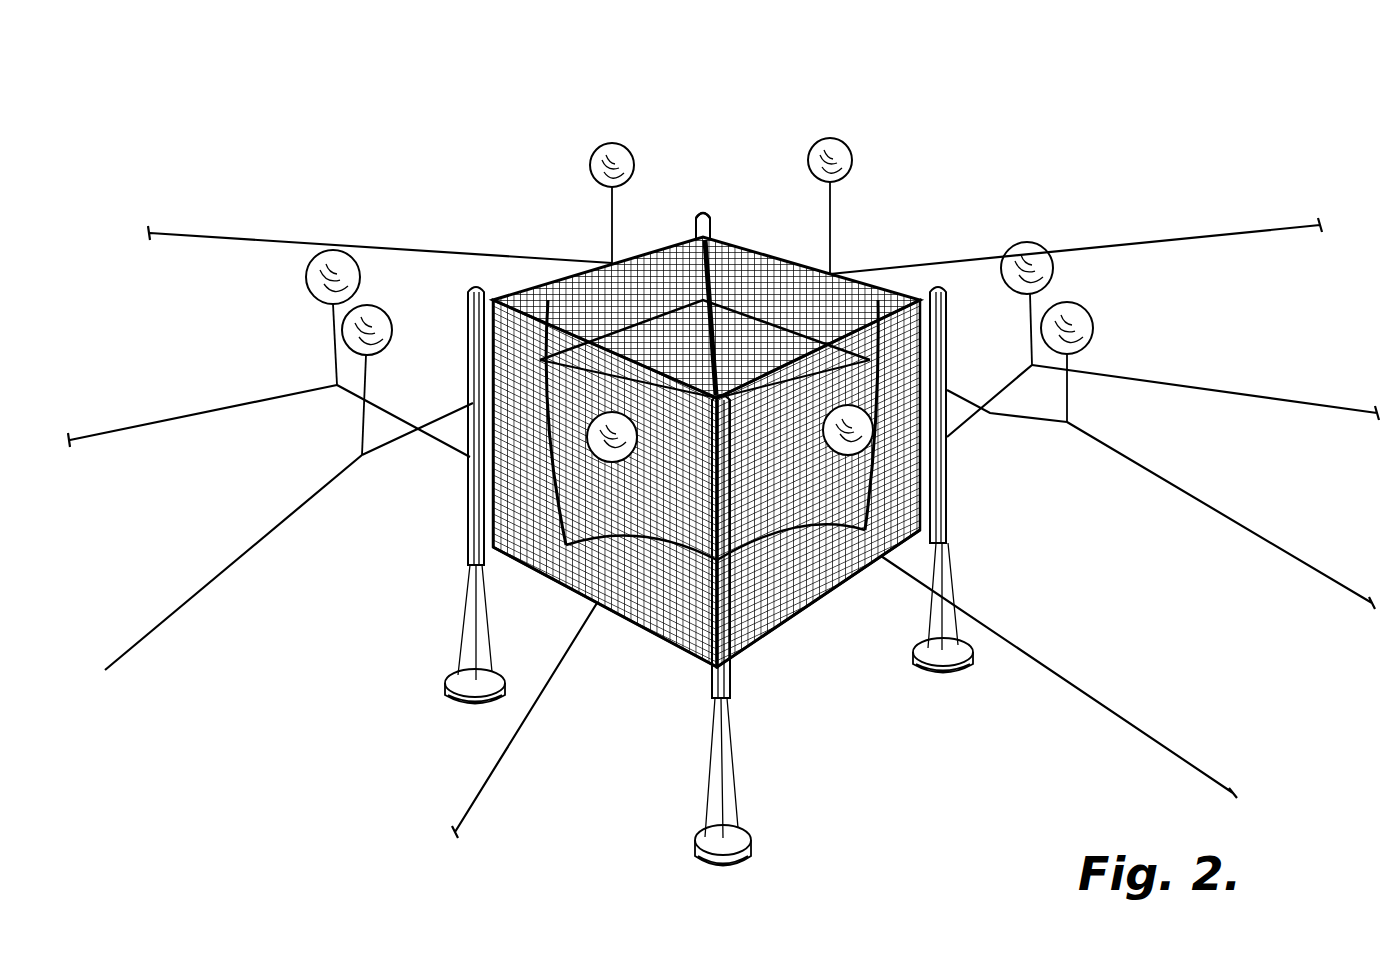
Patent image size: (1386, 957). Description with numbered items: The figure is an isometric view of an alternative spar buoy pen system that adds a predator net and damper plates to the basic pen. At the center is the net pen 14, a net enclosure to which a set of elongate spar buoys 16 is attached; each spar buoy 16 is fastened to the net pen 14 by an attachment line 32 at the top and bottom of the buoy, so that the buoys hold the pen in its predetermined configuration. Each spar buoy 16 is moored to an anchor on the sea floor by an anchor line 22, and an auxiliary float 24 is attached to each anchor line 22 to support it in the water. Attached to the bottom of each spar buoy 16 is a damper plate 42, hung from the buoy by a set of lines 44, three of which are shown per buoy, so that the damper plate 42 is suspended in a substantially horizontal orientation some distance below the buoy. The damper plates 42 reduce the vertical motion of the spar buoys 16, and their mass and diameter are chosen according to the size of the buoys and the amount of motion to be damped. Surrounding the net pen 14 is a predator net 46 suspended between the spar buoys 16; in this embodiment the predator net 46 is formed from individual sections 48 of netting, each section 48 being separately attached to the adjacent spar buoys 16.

The net pen 14 is at (815, 292).
The spar buoy 16 is at (712, 218).
The anchor line 22 is at (345, 246).
The auxiliary float 24 is at (600, 160).
The attachment line 32 is at (701, 210).
The damper plate 42 is at (447, 696).
The lines 44 is at (470, 612).
The predator net 46 is at (556, 609).
The sections of netting 48 is at (656, 250).